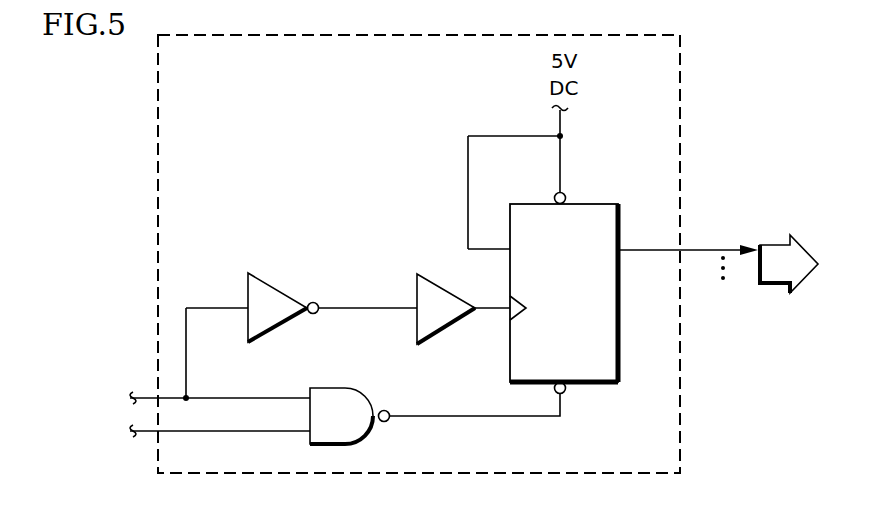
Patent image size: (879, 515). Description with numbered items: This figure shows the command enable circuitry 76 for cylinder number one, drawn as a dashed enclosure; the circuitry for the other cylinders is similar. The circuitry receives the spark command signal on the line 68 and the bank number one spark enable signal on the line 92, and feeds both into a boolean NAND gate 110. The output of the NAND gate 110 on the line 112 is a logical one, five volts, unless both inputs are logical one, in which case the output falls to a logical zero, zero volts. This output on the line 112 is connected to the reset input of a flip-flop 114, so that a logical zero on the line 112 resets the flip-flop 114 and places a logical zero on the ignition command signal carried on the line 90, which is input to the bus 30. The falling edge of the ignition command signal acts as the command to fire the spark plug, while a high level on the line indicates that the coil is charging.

The command enable circuitry 76 is at (695, 106).
The flip-flop 114 is at (585, 204).
The ignition command signal line 90 is at (692, 250).
The bus 30 is at (773, 250).
The spark command signal line 68 is at (147, 395).
The bank #1 spark enable signal line 92 is at (150, 433).
The NAND gate 110 is at (325, 388).
The NAND gate output line 112 is at (423, 415).